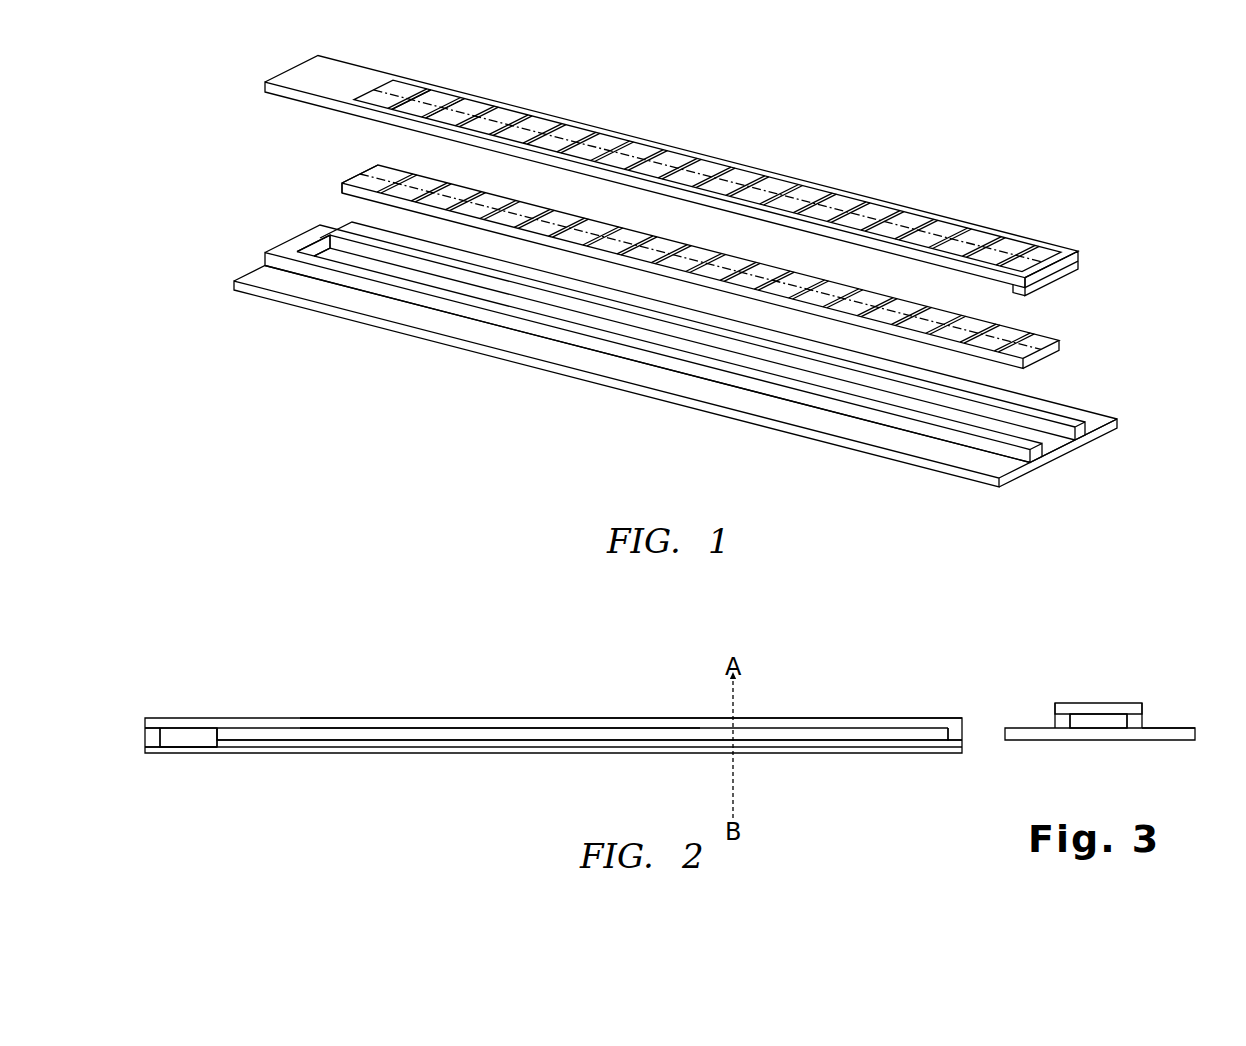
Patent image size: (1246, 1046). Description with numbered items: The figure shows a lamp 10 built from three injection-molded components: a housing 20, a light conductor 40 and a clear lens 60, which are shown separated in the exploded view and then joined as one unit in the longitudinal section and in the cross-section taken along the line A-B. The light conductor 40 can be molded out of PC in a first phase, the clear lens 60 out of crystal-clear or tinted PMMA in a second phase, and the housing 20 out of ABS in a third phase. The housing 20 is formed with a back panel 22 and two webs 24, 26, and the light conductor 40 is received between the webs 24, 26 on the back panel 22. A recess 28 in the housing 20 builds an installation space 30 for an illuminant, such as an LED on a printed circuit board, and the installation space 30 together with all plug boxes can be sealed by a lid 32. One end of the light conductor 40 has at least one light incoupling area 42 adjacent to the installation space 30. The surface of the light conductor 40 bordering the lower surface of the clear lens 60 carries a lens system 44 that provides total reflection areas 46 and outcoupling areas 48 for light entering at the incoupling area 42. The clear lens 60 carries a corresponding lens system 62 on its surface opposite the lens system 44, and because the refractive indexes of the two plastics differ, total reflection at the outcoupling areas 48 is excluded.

In FIG. 1, the lamp 10 is at (326, 375).
In FIG. 2, the lamp 10 is at (766, 700).
In FIG. 1, the housing 20 is at (627, 396).
In FIG. 2, the housing 20 is at (370, 754).
In FIG. 3, the housing 20 is at (1142, 744).
In FIG. 1, the back panel 22 is at (937, 446).
In FIG. 2, the back panel 22 is at (674, 748).
In FIG. 3, the back panel 22 is at (1161, 739).
In FIG. 1, the web 24 is at (1043, 452).
In FIG. 3, the web 24 is at (1058, 720).
In FIG. 1, the web 26 is at (1089, 427).
In FIG. 3, the web 26 is at (1140, 720).
In FIG. 1, the recess 28 is at (323, 251).
In FIG. 2, the recess 28 is at (207, 748).
In FIG. 2, the installation space 30 is at (190, 736).
In FIG. 2, the lid 32 is at (162, 750).
In FIG. 1, the light conductor 40 is at (337, 182).
In FIG. 2, the light conductor 40 is at (525, 736).
In FIG. 3, the light conductor 40 is at (1088, 721).
In FIG. 1, the light incoupling area 42 is at (361, 171).
In FIG. 2, the light incoupling area 42 is at (222, 740).
In FIG. 1, the lens system 44 is at (1045, 273).
In FIG. 2, the lens system 44 is at (818, 742).
In FIG. 2, the total reflection area 46 is at (492, 721).
In FIG. 2, the outcoupling area 48 is at (572, 721).
In FIG. 1, the clear lens 60 is at (786, 167).
In FIG. 2, the clear lens 60 is at (445, 729).
In FIG. 3, the clear lens 60 is at (1115, 717).
In FIG. 1, the lens system 62 is at (584, 146).
In FIG. 2, the lens system 62 is at (816, 727).